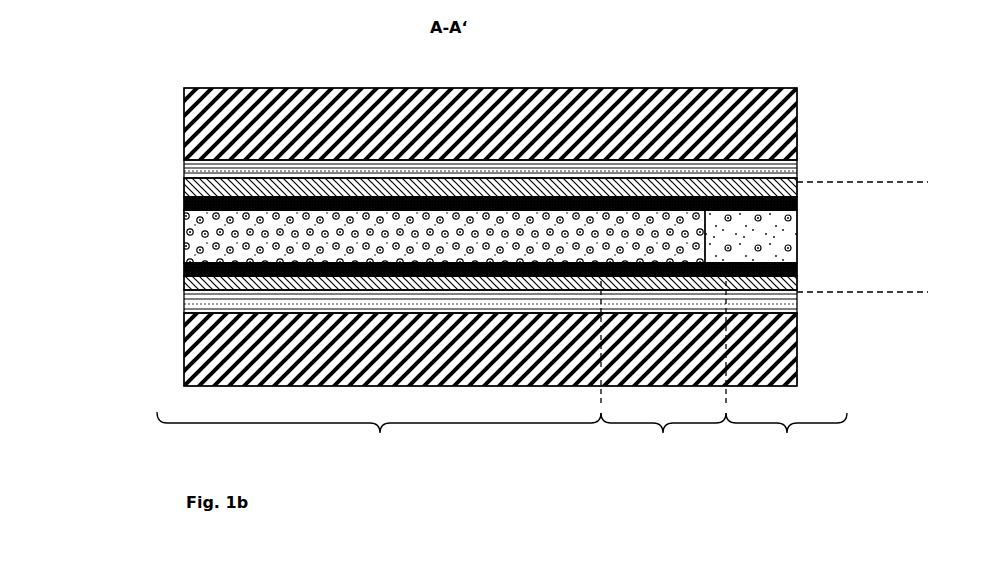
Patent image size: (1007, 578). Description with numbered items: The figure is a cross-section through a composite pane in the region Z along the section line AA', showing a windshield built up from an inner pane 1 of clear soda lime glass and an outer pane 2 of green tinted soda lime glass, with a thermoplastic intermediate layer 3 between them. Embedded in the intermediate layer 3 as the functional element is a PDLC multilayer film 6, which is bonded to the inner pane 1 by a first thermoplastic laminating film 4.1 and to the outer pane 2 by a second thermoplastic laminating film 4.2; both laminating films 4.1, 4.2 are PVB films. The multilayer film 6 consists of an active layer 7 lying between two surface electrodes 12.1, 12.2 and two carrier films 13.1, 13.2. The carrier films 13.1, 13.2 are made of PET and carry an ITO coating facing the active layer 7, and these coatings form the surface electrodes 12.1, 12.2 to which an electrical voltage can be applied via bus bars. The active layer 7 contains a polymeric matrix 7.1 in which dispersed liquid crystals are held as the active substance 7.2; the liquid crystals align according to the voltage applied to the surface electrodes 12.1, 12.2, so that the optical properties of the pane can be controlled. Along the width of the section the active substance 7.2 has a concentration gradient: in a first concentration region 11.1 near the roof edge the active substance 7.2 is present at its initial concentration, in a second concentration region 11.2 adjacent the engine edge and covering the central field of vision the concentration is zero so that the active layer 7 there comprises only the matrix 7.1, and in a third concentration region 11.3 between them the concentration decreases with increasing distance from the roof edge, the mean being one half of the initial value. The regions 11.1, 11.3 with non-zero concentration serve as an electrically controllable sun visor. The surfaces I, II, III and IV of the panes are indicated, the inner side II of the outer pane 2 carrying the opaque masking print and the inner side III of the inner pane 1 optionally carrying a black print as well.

The inner pane 1 is at (212, 371).
The outer pane 2 is at (313, 92).
The thermoplastic intermediate layer 3 is at (82, 120).
The first thermoplastic laminating film 4.1 is at (215, 303).
The second thermoplastic laminating film 4.2 is at (227, 173).
The multilayer film 6 is at (920, 182).
The active layer 7 is at (543, 236).
The matrix 7.1 is at (750, 247).
The active substance 7.2 is at (718, 230).
The first concentration region 11.1 is at (379, 437).
The second concentration region 11.2 is at (786, 437).
The third concentration region 11.3 is at (663, 362).
The first surface electrode 12.1 is at (186, 266).
The second surface electrode 12.2 is at (186, 207).
The first carrier film 13.1 is at (205, 281).
The second carrier film 13.2 is at (222, 188).
The first side I is at (683, 88).
The inner side of the outer pane II is at (760, 160).
The inner side of the inner pane III is at (453, 312).
The fourth side IV is at (520, 386).
The region Z is at (797, 128).